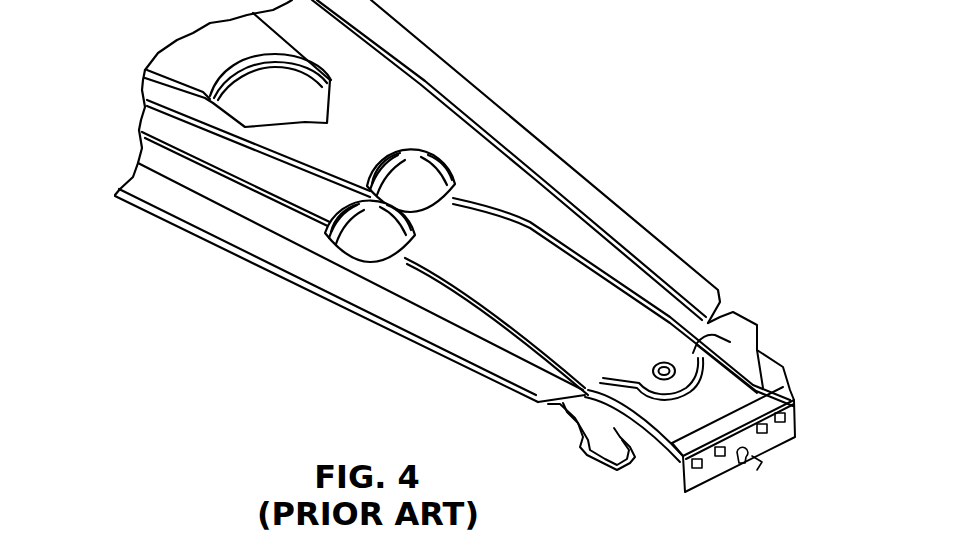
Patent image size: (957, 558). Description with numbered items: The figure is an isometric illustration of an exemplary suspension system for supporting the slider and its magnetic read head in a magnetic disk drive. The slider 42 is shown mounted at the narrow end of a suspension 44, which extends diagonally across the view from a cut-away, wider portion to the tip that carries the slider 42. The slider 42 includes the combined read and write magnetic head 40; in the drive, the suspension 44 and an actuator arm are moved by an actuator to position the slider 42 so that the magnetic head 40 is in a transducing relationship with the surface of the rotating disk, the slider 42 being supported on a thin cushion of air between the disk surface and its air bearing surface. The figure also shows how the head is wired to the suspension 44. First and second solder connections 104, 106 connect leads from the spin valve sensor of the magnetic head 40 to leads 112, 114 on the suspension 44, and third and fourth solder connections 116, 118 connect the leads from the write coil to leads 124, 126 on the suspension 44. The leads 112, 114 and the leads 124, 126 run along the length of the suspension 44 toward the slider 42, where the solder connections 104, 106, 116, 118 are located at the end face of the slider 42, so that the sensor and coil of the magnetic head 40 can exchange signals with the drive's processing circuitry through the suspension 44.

The suspension 44 is at (417, 201).
The slider 42 is at (625, 480).
The magnetic head 40 is at (755, 468).
The first solder connection 104 is at (692, 458).
The second solder connection 106 is at (790, 413).
The lead 112 is at (458, 288).
The lead 114 is at (620, 281).
The third solder connection 116 is at (713, 462).
The fourth solder connection 118 is at (767, 422).
The lead 124 is at (466, 291).
The lead 126 is at (538, 235).